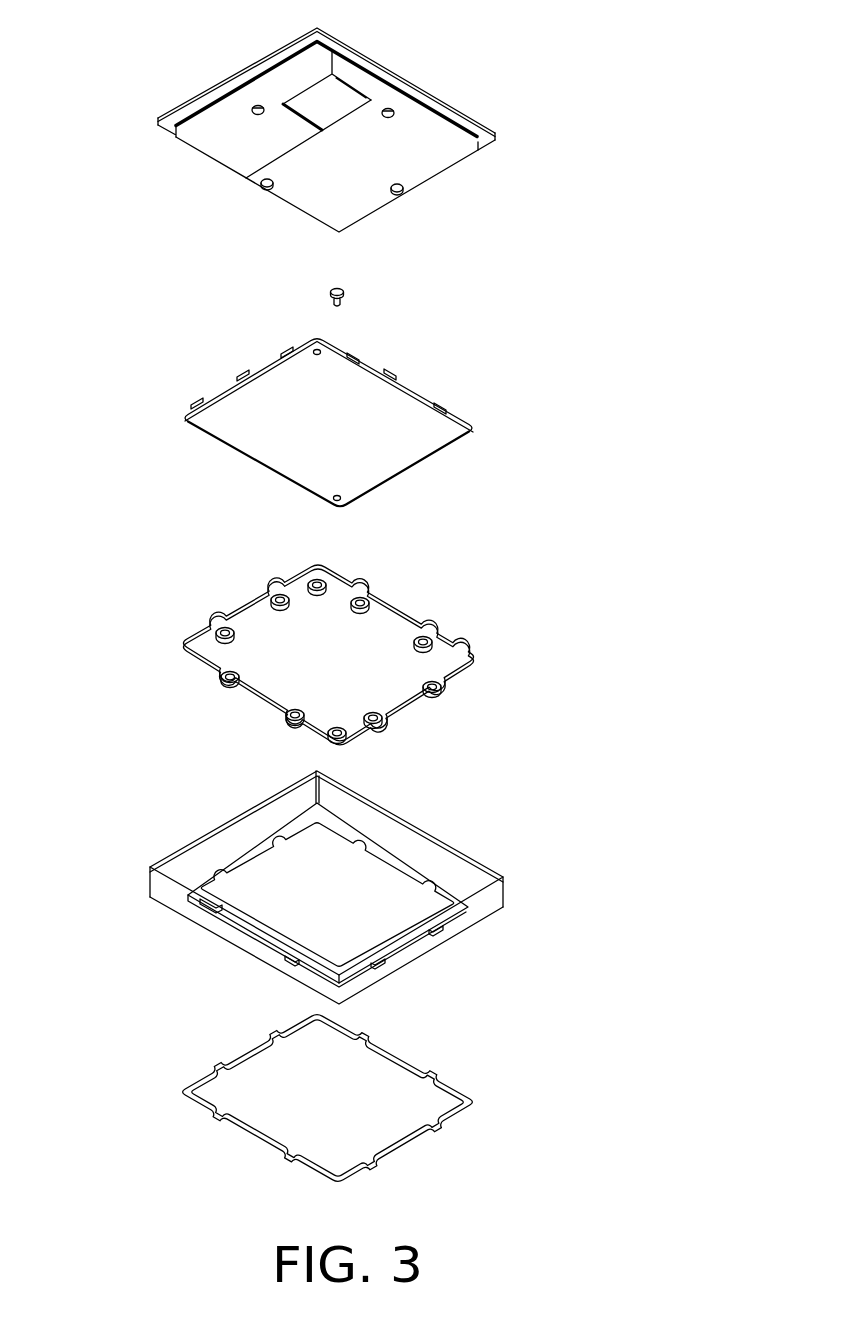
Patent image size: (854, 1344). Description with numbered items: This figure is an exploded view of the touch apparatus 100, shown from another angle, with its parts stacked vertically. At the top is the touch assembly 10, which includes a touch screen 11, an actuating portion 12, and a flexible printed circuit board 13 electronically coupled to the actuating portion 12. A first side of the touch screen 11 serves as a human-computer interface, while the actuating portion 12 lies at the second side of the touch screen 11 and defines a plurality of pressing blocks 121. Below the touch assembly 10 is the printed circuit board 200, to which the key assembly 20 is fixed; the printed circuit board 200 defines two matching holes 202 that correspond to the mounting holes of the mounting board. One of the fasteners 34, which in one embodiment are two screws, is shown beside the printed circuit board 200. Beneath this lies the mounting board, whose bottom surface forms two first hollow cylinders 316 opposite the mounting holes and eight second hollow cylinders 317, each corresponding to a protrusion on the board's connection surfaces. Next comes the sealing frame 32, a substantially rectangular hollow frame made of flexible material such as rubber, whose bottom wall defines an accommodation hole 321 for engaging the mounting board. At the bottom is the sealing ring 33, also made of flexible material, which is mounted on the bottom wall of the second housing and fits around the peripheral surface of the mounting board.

The touch apparatus 100 is at (88, 30).
The touch assembly 10 is at (250, 46).
The touch screen 11 is at (441, 103).
The actuating portion 12 is at (462, 137).
The flexible printed circuit board 13 is at (340, 97).
The pressing block 121 is at (262, 188).
The key assembly 20 is at (250, 370).
The printed circuit board 200 is at (217, 428).
The matching holes 202 is at (307, 345).
The fasteners 34 is at (345, 290).
The first hollow cylinders 316 is at (315, 583).
The second hollow cylinders 317 is at (362, 603).
The sealing frame 32 is at (415, 843).
The accommodation hole 321 is at (386, 914).
The sealing ring 33 is at (400, 1055).